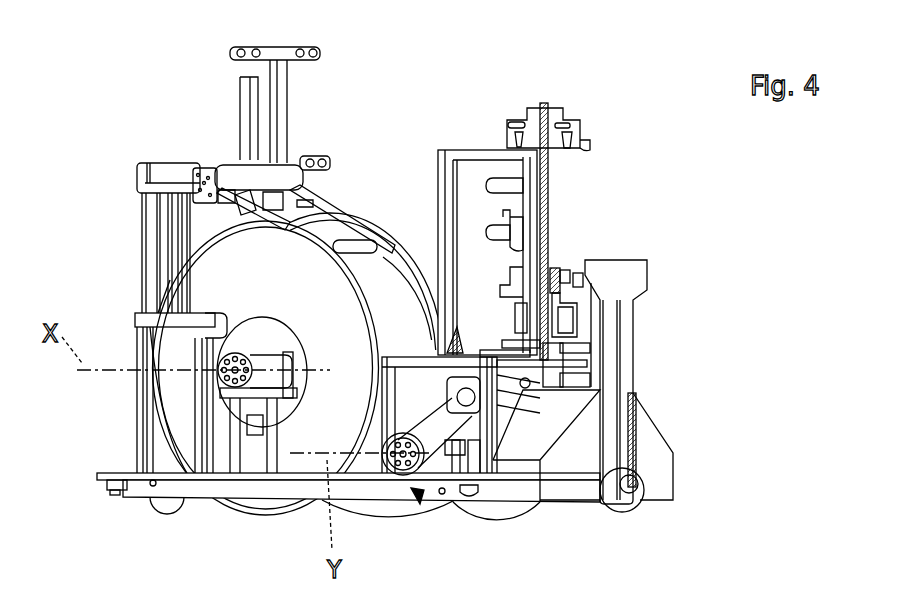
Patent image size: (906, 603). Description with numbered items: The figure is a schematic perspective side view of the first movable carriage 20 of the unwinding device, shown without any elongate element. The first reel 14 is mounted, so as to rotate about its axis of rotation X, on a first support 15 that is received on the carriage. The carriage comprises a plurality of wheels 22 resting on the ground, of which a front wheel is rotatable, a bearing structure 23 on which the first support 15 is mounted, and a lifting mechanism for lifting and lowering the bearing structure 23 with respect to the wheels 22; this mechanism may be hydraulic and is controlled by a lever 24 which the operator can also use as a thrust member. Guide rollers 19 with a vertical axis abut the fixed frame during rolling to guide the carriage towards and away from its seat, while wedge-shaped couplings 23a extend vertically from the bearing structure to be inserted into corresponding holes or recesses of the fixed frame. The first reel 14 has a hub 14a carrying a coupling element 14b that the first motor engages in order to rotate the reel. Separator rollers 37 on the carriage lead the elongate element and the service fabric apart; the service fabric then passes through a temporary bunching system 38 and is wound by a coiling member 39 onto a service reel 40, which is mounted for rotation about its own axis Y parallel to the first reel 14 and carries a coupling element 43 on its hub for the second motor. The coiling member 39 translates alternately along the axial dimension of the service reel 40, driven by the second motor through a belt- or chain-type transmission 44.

The first reel 14 is at (339, 284).
The hub 14a is at (260, 352).
The coupling element 14b is at (230, 360).
The first support 15 is at (232, 420).
The guide rollers 19 is at (115, 490).
The first movable carriage 20 is at (672, 222).
The wheels 22 is at (623, 516).
The bearing structure 23 is at (420, 504).
The wedge-shaped couplings 23a is at (152, 486).
The lever 24 is at (634, 364).
The separator rollers 37 is at (240, 173).
The temporary bunching system 38 is at (566, 252).
The coiling member 39 is at (523, 338).
The service reel 40 is at (428, 410).
The coupling element 43 is at (401, 483).
The transmission 44 is at (455, 428).